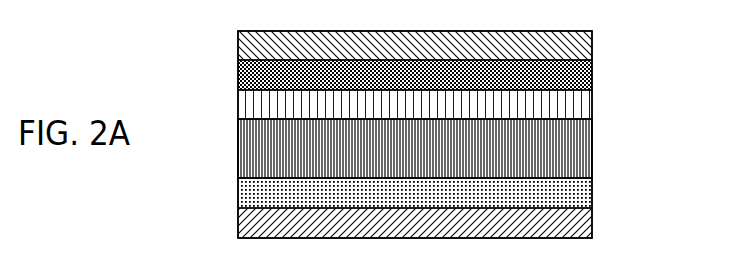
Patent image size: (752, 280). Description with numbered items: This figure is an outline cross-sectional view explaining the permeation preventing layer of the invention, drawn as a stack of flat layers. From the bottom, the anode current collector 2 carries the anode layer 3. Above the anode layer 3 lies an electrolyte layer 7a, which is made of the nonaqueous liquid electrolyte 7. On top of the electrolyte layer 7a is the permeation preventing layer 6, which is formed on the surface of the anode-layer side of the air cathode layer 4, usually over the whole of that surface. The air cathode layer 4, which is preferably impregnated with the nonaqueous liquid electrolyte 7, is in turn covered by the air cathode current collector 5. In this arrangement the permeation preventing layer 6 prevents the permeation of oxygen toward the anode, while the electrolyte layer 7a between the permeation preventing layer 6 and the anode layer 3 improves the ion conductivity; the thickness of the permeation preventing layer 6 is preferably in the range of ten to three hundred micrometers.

The anode current collector 2 is at (577, 222).
The anode layer 3 is at (577, 190).
The electrolyte layer 7a is at (577, 149).
The nonaqueous liquid electrolyte 7 is at (415, 148).
The permeation preventing layer 6 is at (577, 105).
The air cathode layer 4 is at (577, 76).
The air cathode current collector 5 is at (577, 44).